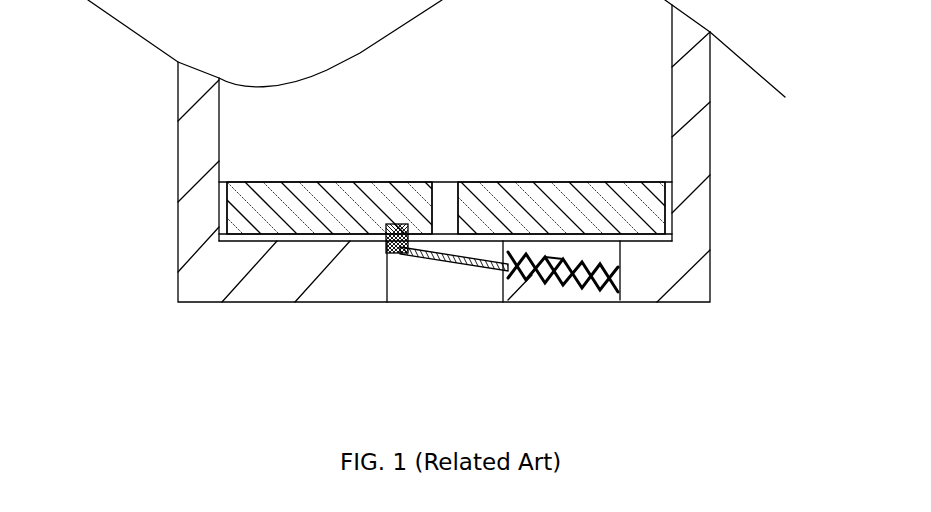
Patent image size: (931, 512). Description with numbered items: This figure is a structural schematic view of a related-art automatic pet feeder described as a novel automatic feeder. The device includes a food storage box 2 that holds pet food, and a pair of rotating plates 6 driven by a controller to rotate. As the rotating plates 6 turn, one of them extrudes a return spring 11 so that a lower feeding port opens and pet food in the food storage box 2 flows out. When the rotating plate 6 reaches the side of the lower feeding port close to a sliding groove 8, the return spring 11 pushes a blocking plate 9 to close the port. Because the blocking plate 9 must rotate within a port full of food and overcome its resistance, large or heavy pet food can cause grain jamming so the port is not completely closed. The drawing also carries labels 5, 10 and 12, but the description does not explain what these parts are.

The food storage box 2 is at (200, 263).
The frame 5 is at (443, 196).
The rotating plates 6 is at (607, 213).
The sliding groove 8 is at (558, 262).
The blocking plate 9 is at (473, 258).
The pin 10 is at (385, 250).
The return spring 11 is at (622, 300).
The spring 12 is at (618, 268).